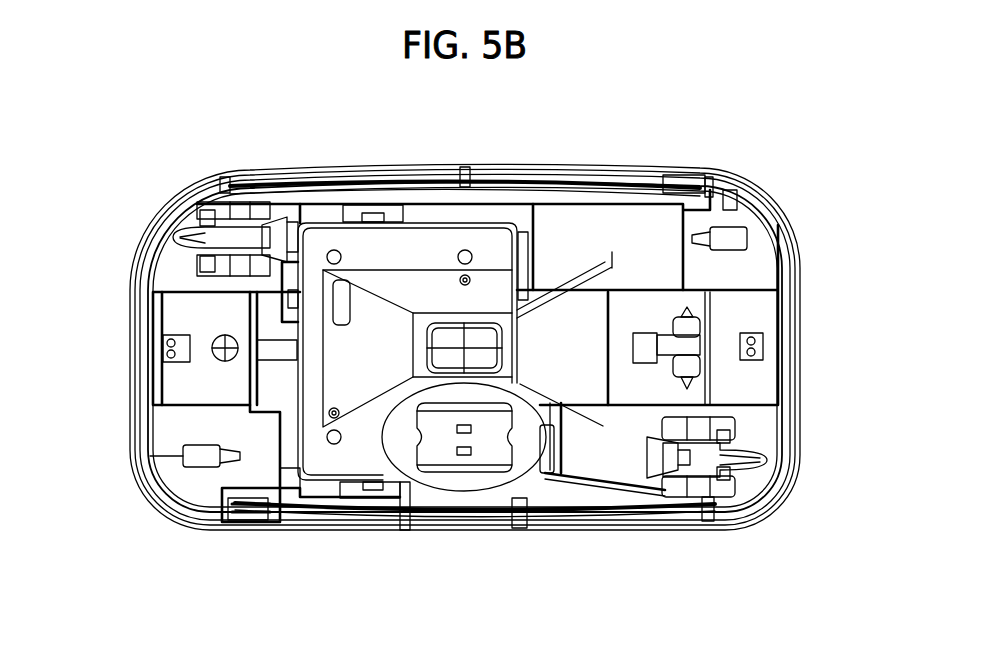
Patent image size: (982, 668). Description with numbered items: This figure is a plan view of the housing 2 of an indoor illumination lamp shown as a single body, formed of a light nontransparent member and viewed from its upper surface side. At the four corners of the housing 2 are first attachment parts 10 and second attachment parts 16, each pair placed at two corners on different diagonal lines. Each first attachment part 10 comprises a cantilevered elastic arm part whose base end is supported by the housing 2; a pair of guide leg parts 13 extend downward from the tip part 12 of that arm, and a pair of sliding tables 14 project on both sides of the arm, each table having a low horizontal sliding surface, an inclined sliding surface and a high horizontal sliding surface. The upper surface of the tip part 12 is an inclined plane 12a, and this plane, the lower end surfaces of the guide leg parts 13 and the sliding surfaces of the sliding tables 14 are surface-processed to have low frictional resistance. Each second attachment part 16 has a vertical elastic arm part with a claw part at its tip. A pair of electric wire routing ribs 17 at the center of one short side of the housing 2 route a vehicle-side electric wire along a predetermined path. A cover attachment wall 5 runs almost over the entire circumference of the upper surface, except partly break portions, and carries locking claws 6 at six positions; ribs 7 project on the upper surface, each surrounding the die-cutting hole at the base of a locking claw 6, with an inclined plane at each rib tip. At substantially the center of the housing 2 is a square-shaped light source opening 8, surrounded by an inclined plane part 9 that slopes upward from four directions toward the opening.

The housing 2 is at (616, 155).
The cover attachment wall 5 is at (338, 498).
The locking claw 6 is at (292, 300).
The rib 7 is at (285, 262).
The light source opening 8 is at (495, 330).
The inclined plane part 9 is at (597, 500).
The first attachment part 10 is at (165, 236).
The tip part 12 is at (284, 230).
The inclined plane 12a is at (222, 180).
The guide leg part 13 is at (200, 232).
The sliding table 14 is at (210, 212).
The second attachment part 16 is at (200, 453).
The electric wire routing rib 17 is at (700, 332).